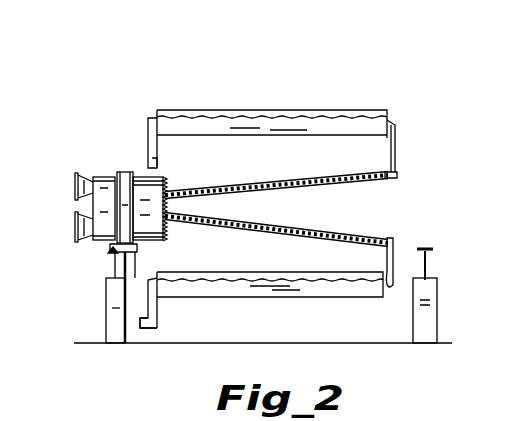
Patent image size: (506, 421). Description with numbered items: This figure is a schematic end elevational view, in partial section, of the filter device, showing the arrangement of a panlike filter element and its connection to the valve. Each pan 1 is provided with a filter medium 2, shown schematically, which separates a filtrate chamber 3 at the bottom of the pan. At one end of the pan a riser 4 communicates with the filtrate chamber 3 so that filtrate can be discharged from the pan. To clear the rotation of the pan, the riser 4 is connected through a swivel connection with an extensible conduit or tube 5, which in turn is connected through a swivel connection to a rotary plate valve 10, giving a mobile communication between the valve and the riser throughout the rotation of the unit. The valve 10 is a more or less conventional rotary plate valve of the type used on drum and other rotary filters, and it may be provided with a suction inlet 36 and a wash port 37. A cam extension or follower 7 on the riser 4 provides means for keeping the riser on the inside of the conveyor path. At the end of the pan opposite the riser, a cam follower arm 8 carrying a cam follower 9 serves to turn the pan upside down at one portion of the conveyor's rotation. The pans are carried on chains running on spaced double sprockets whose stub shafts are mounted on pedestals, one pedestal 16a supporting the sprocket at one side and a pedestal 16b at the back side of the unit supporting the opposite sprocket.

The pan 1 is at (290, 110).
The filter medium 2 is at (237, 118).
The filtrate chamber 3 is at (245, 130).
The riser 4 is at (390, 272).
The extensible conduit or tube 5 is at (293, 221).
The cam extension or follower 7 is at (397, 243).
The cam follower arm 8 is at (158, 308).
The cam follower 9 is at (142, 330).
The rotary plate valve 10 is at (119, 164).
The pedestal 16a is at (425, 318).
The pedestal 16b is at (122, 310).
The suction inlet 36 is at (77, 192).
The wash port 37 is at (78, 242).